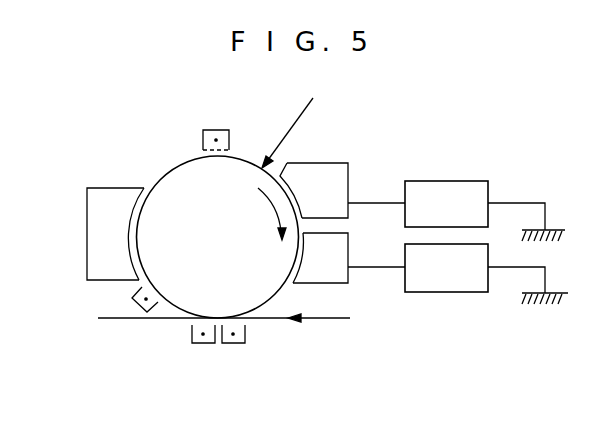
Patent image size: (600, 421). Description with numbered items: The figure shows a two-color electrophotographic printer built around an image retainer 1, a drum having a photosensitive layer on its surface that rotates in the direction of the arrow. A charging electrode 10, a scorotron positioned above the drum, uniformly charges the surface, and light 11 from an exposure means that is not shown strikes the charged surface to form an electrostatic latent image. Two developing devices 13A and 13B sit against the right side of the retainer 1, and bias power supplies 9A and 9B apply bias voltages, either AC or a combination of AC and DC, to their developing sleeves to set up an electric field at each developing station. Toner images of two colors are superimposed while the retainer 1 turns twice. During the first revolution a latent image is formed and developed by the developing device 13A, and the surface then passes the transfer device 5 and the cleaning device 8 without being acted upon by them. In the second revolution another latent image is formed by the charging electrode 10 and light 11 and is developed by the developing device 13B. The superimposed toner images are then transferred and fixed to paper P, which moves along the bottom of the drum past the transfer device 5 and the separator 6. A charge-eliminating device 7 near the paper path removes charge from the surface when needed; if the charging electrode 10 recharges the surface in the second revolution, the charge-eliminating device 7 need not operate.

The image retainer 1 is at (165, 178).
The transfer device 5 is at (234, 343).
The separator 6 is at (204, 343).
The charge-eliminating device 7 is at (133, 298).
The cleaning device 8 is at (87, 233).
The bias power supply 9A is at (463, 292).
The bias power supply 9B is at (463, 181).
The charging electrode 10 is at (216, 130).
The light 11 is at (290, 130).
The developing device 13A is at (312, 283).
The developing device 13B is at (337, 163).
The paper P is at (135, 320).